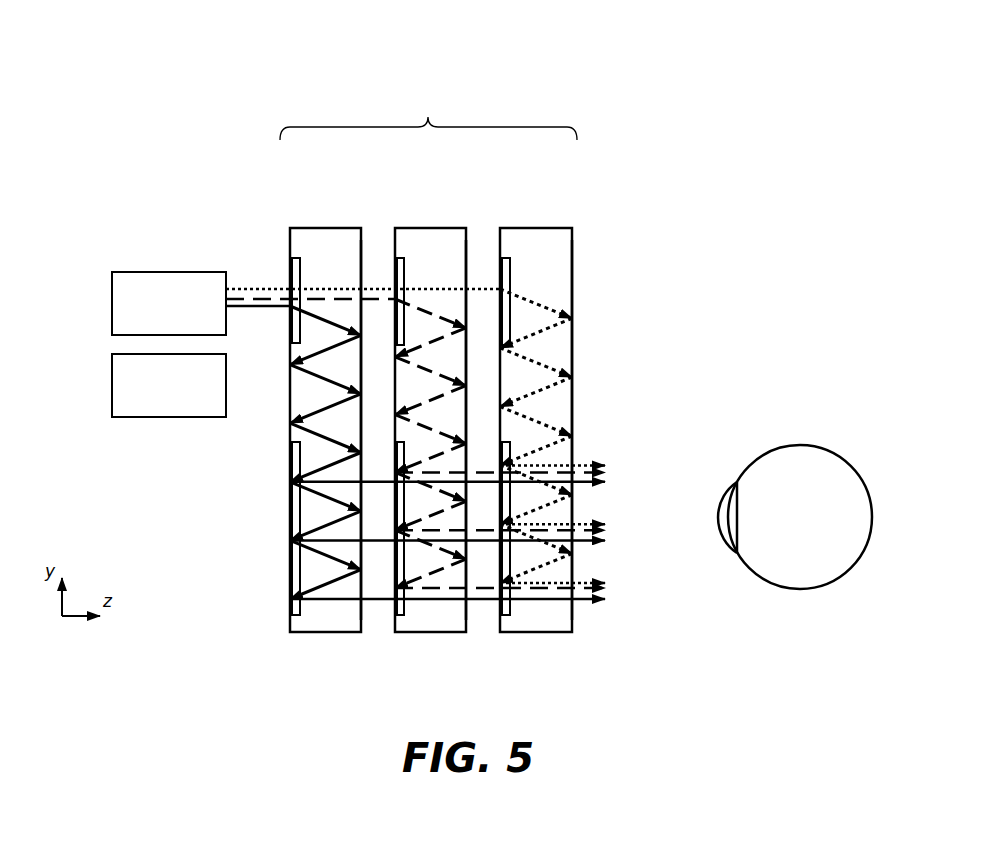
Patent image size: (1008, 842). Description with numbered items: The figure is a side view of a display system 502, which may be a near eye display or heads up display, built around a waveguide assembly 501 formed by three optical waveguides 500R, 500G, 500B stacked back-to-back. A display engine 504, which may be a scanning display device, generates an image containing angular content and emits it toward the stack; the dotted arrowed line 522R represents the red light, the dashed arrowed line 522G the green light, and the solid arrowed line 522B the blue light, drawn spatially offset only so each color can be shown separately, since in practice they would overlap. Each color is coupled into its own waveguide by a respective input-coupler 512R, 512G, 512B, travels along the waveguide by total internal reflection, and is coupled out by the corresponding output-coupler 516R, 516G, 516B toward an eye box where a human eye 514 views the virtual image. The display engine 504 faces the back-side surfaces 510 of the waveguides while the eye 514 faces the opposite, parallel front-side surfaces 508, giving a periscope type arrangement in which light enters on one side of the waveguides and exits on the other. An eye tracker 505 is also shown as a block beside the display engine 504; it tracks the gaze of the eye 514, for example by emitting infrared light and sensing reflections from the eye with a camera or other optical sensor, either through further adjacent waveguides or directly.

The display system 502 is at (252, 42).
The waveguide assembly 501 is at (428, 116).
The optical waveguide 500B is at (313, 228).
The optical waveguide 500G is at (420, 228).
The optical waveguide 500R is at (527, 228).
The input-coupler 512B is at (292, 259).
The input-coupler 512G is at (397, 259).
The input-coupler 512R is at (502, 259).
The front-side surface 508 is at (363, 262).
The back-side surface 510 is at (290, 388).
The output-coupler 516B is at (292, 612).
The output-coupler 516G is at (397, 612).
The output-coupler 516R is at (502, 612).
The dotted arrowed line 522R is at (252, 288).
The dashed arrowed line 522G is at (237, 300).
The solid arrowed line 522B is at (257, 307).
The display engine 504 is at (178, 272).
The eye tracker 505 is at (140, 417).
The human eye 514 is at (792, 442).